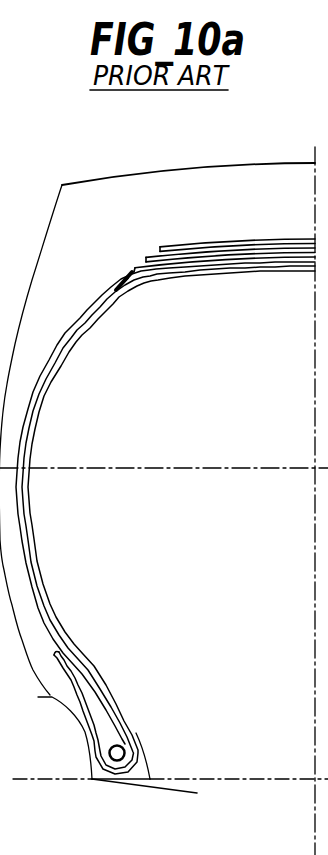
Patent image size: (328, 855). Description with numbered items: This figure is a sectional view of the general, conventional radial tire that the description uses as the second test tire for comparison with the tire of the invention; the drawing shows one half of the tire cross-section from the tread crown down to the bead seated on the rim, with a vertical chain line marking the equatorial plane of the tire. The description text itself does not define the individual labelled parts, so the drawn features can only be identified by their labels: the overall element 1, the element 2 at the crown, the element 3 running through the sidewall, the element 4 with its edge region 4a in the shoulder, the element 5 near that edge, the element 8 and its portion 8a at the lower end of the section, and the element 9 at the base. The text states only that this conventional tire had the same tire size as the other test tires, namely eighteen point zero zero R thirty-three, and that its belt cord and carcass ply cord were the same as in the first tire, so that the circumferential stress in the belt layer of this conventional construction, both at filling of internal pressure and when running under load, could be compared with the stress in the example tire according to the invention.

The pneumatic tire 1 is at (256, 149).
The tread 2 is at (190, 168).
The carcass ply 3 is at (70, 351).
The belt 4 is at (245, 242).
The belt edge 4a is at (137, 266).
The belt edge cushion rubber 5 is at (135, 272).
The bead portion 8 is at (80, 727).
The bead heel 8a is at (90, 771).
The rim 9 is at (268, 778).